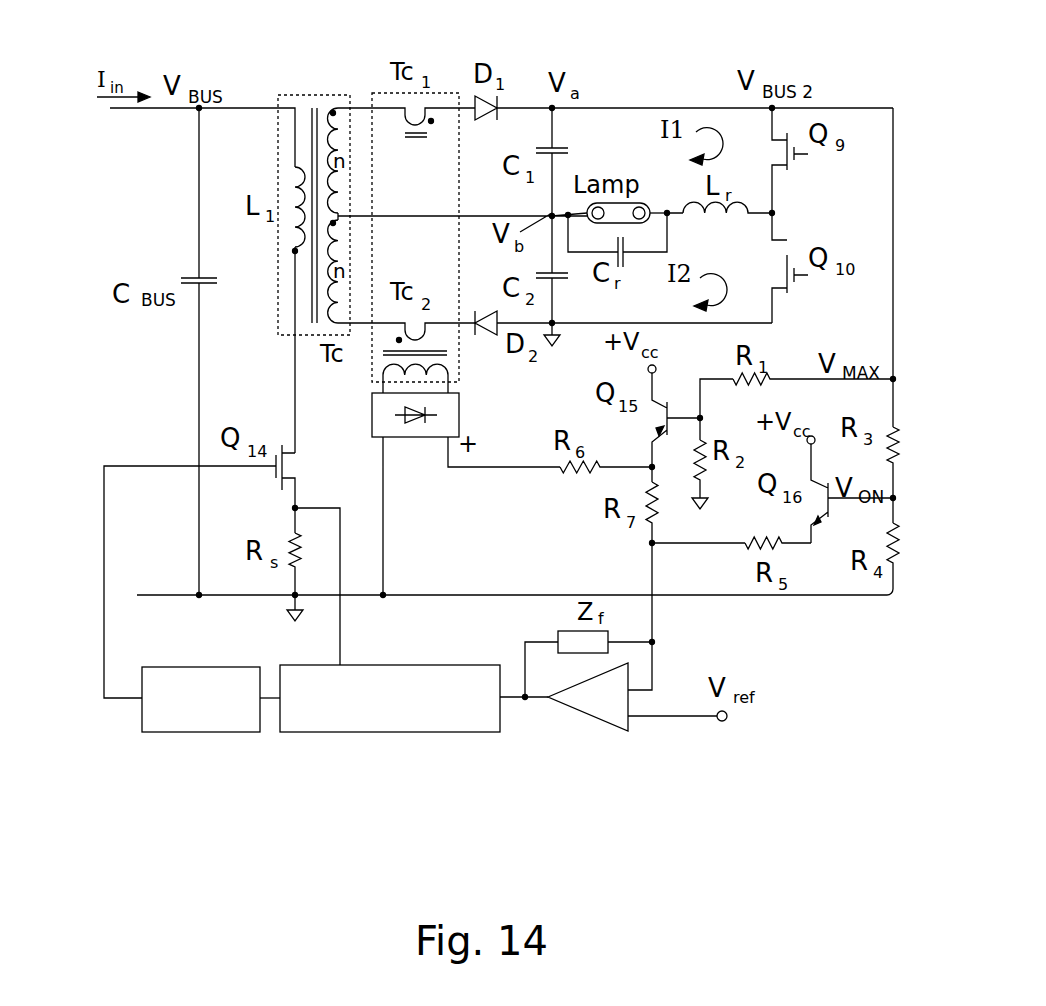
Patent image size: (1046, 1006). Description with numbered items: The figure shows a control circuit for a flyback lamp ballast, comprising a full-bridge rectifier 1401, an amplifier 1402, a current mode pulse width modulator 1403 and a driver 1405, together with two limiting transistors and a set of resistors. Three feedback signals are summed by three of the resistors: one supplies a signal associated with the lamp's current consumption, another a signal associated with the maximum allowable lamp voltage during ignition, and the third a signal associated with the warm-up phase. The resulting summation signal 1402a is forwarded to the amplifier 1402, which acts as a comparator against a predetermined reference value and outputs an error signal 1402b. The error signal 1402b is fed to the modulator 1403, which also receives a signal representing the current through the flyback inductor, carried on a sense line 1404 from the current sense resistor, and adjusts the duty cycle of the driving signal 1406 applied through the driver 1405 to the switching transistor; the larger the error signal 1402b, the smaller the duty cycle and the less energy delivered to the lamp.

The full-bridge rectifier 1401 is at (412, 437).
The amplifier 1402 is at (598, 718).
The summation signal 1402a is at (653, 617).
The error signal 1402b is at (513, 698).
The current mode pulse width modulation (CMPWM) modulator 1403 is at (380, 732).
The current sense line 1404 is at (342, 620).
The driver 1405 is at (197, 732).
The driving signal 1406 is at (103, 592).